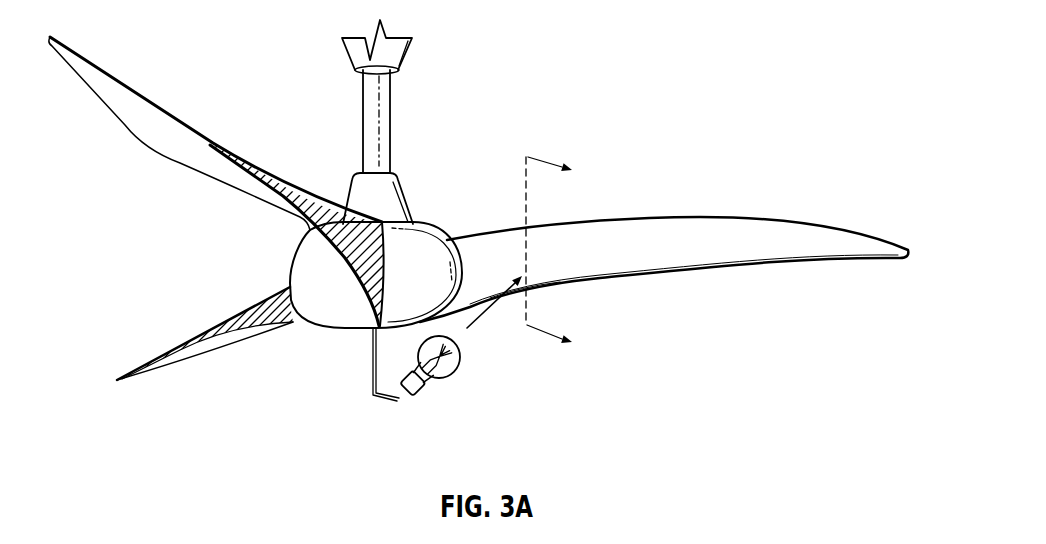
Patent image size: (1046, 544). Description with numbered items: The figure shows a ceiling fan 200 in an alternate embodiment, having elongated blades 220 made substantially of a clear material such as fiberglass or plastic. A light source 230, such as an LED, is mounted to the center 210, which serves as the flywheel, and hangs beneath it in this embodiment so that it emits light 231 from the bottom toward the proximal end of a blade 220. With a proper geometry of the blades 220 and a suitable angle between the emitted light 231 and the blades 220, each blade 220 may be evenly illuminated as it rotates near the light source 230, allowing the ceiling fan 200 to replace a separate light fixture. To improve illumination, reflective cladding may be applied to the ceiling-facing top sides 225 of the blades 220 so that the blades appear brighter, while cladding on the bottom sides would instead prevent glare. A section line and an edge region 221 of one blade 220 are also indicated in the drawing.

The ceiling fan 200 is at (648, 72).
The center 210 is at (315, 257).
The blade 220 is at (175, 167).
The blade edge 221 is at (525, 273).
The ceiling-facing top side 225 is at (320, 208).
The light source 230 is at (418, 394).
The light 231 is at (471, 326).